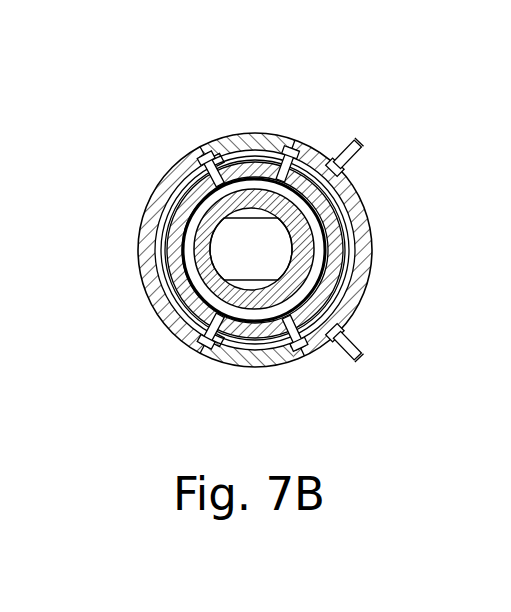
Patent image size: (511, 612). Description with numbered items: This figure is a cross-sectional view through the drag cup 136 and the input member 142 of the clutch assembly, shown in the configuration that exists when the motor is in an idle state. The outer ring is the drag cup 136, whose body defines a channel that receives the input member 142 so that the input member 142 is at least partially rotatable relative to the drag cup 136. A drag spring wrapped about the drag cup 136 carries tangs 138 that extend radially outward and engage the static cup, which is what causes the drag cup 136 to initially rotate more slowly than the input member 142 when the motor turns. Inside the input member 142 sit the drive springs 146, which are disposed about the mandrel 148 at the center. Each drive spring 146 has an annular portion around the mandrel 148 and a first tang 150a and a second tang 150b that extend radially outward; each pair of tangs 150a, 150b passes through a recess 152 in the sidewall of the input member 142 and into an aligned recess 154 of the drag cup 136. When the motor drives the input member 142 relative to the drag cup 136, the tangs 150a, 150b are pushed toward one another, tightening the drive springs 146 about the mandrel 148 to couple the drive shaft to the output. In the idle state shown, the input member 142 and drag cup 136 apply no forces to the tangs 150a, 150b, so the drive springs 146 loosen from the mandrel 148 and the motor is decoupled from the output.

The drag cup 136 is at (347, 278).
The tang 138 is at (355, 152).
The input member 142 is at (324, 214).
The drive spring 146 is at (186, 241).
The mandrel 148 is at (198, 297).
The first tang 150a is at (196, 181).
The second tang 150b is at (290, 160).
The recess 152 is at (205, 150).
The recess 154 is at (234, 165).